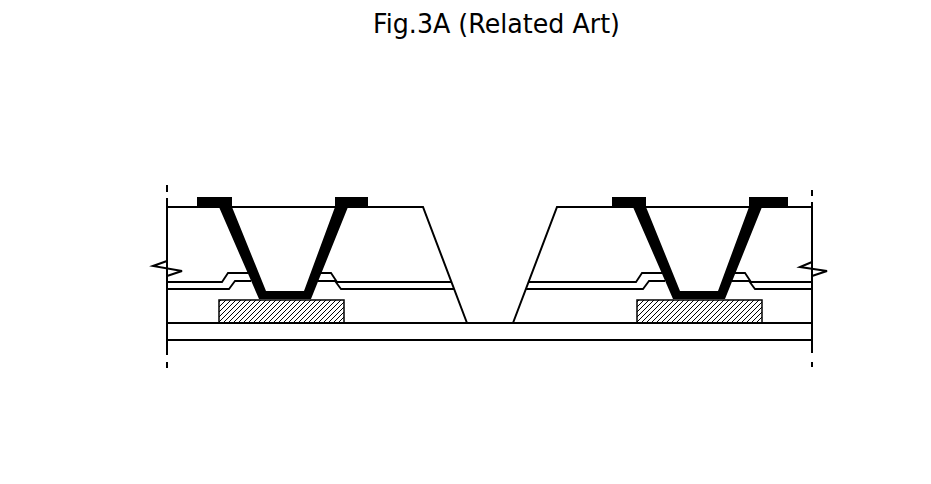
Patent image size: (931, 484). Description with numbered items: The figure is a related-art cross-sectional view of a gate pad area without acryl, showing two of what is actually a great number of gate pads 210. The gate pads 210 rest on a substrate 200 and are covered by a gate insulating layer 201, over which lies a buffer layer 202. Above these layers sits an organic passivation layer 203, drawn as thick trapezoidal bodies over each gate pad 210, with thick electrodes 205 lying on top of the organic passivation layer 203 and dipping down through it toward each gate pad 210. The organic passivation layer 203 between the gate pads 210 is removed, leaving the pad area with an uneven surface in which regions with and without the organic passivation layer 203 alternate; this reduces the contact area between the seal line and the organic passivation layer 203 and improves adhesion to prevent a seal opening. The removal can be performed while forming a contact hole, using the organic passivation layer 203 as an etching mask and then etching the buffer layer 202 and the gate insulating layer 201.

The substrate 200 is at (167, 330).
The gate insulating layer 201 is at (173, 303).
The buffer layer 202 is at (170, 283).
The organic passivation layer 203 is at (172, 235).
The source/drain electrode 205 is at (213, 197).
The gate pad 210 is at (285, 313).